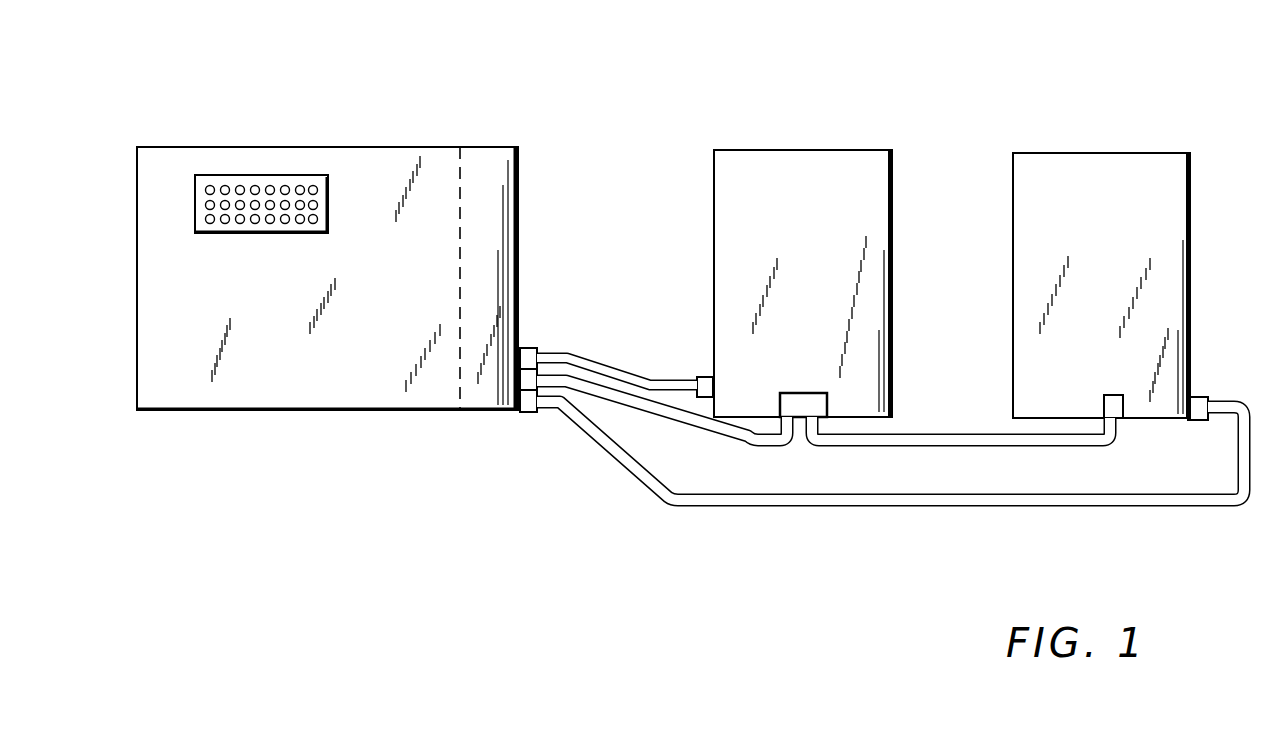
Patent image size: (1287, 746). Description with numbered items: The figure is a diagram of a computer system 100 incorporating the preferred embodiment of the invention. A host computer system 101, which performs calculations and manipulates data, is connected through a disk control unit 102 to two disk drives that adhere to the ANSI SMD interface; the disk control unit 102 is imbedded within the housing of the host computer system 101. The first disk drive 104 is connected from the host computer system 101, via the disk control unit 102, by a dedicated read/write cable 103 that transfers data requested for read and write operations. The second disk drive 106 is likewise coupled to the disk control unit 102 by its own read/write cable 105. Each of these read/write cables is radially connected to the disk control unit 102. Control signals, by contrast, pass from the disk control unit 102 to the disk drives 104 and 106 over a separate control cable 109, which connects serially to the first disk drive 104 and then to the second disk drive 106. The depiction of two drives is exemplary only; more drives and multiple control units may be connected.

The computer system 100 is at (679, 84).
The host computer system 101 is at (262, 413).
The disk control unit 102 is at (487, 167).
The read/write cable 103 is at (610, 366).
The first disk drive 104 is at (893, 258).
The read/write cable 105 is at (888, 510).
The second disk drive 106 is at (1191, 254).
The control cable 109 is at (693, 428).